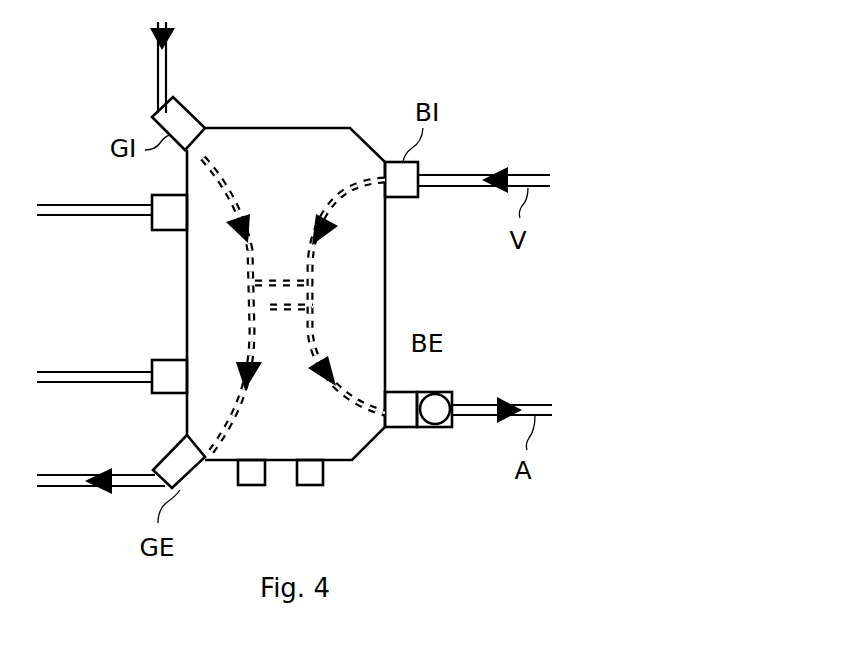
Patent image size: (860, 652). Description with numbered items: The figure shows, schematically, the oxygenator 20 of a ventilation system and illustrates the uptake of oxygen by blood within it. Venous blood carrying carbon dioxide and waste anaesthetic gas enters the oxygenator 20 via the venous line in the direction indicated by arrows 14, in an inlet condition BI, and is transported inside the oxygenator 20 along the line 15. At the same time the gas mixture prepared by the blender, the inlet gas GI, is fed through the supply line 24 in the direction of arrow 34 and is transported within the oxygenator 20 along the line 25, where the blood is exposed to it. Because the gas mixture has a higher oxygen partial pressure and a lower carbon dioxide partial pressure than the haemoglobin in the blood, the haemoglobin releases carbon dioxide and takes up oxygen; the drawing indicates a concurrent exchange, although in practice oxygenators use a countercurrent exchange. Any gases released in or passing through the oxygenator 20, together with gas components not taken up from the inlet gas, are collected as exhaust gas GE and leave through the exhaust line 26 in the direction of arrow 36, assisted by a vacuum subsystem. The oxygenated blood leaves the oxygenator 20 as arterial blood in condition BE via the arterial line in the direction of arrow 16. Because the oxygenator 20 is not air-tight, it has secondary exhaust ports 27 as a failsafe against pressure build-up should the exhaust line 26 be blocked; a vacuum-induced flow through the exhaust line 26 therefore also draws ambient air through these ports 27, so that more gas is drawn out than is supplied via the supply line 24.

The oxygenator 20 is at (266, 184).
The line 25 is at (248, 276).
The line 15 is at (313, 276).
The supply line 24 is at (166, 72).
The arrow 34 is at (168, 40).
The arrows 14 is at (508, 170).
The arrow 16 is at (500, 397).
The exhaust line 26 is at (48, 473).
The arrow 36 is at (107, 473).
The secondary exhaust ports 27 is at (252, 485).